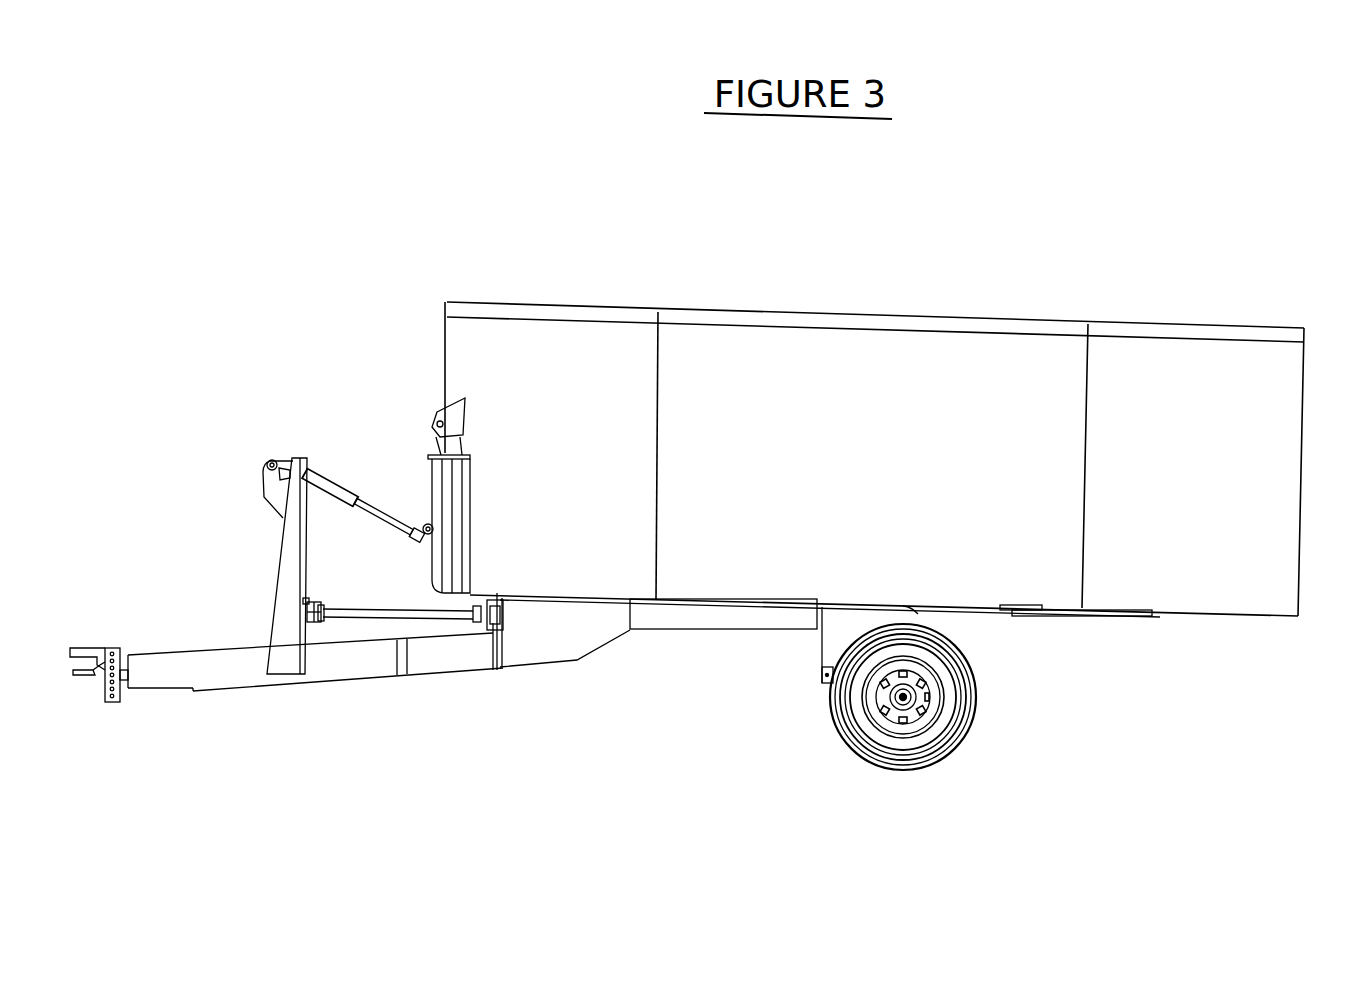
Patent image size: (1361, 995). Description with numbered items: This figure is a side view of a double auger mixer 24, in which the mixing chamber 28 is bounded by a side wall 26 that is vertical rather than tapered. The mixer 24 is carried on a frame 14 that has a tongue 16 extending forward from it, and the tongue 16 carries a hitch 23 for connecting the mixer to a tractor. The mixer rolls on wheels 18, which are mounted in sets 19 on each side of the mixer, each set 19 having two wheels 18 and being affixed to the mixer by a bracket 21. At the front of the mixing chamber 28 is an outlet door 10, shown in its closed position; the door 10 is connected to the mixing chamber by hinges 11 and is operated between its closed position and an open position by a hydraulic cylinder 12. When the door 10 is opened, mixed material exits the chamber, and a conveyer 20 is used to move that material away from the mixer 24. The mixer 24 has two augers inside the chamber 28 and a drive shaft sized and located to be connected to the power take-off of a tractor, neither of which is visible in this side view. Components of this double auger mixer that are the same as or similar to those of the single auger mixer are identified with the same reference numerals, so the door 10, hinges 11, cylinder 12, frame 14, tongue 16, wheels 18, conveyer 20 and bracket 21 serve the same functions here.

The outlet door 10 is at (443, 500).
The hinges 11 is at (457, 415).
The hydraulic cylinder 12 is at (337, 482).
The frame 14 is at (703, 617).
The tongue 16 is at (167, 667).
The wheels 18 is at (947, 737).
The set of wheels 19 is at (993, 672).
The conveyer 20 is at (418, 610).
The bracket 21 is at (838, 632).
The hitch 23 is at (103, 647).
The mixer 24 is at (1088, 227).
The side wall 26 is at (1184, 572).
The mixing chamber 28 is at (1218, 356).